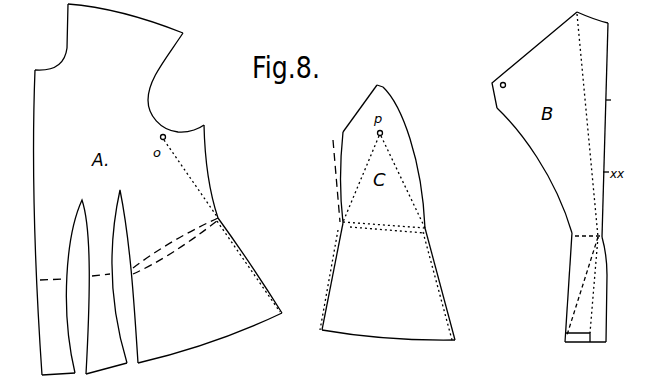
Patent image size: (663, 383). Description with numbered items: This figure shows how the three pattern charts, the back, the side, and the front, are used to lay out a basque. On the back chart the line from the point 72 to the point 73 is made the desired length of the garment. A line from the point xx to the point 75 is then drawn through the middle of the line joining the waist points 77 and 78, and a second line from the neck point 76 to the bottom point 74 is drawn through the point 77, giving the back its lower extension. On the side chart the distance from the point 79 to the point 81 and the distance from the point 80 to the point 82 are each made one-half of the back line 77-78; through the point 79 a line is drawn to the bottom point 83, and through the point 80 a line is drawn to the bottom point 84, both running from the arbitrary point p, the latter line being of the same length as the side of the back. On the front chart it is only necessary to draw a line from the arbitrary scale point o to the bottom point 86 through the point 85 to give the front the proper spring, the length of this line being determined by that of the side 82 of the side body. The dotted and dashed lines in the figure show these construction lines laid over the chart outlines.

The back length point 72 is at (608, 23).
The back bottom point 73 is at (588, 340).
The back side-edge bottom point 74 is at (606, 342).
The back bottom point 75 is at (565, 342).
The back neck point 76 is at (577, 12).
The back waist point 77 is at (603, 236).
The back waist point 78 is at (572, 233).
The side waist point 79 is at (410, 231).
The side waist point 80 is at (352, 226).
The side waist end point 81 is at (425, 228).
The side waist end point 82 is at (343, 223).
The side bottom point 83 is at (322, 330).
The side bottom point 84 is at (455, 340).
The front waist point 85 is at (218, 218).
The front bottom point 86 is at (282, 313).